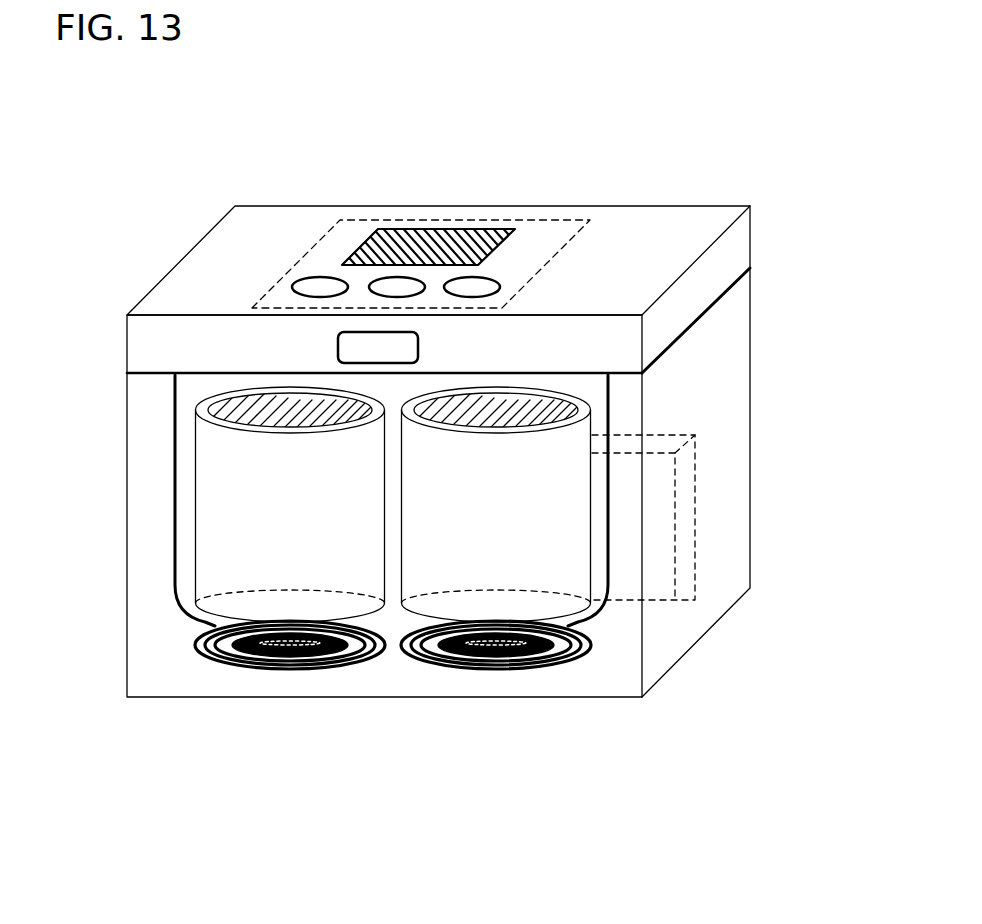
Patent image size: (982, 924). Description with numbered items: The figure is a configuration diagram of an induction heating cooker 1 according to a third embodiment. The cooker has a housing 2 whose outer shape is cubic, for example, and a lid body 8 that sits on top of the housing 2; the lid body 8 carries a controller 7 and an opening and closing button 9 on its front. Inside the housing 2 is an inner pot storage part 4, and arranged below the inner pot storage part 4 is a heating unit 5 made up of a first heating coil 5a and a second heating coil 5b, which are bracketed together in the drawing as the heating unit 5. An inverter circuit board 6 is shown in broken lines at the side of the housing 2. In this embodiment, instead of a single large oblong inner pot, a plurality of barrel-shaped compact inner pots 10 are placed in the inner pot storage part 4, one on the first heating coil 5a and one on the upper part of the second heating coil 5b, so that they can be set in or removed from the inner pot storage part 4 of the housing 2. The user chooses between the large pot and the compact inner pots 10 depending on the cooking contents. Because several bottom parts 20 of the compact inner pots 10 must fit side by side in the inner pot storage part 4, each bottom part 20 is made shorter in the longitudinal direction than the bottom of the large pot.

The induction heating cooker 1 is at (778, 136).
The housing 2 is at (713, 383).
The inner pot storage part 4 is at (175, 420).
The heating unit 5 is at (553, 777).
The first heating coil 5a is at (283, 672).
The second heating coil 5b is at (497, 672).
The inverter circuit board 6 is at (695, 515).
The controller 7 is at (515, 218).
The lid body 8 is at (715, 270).
The opening and closing button 9 is at (370, 348).
The compact inner pot 10 is at (205, 525).
The bottom part 20 is at (213, 610).